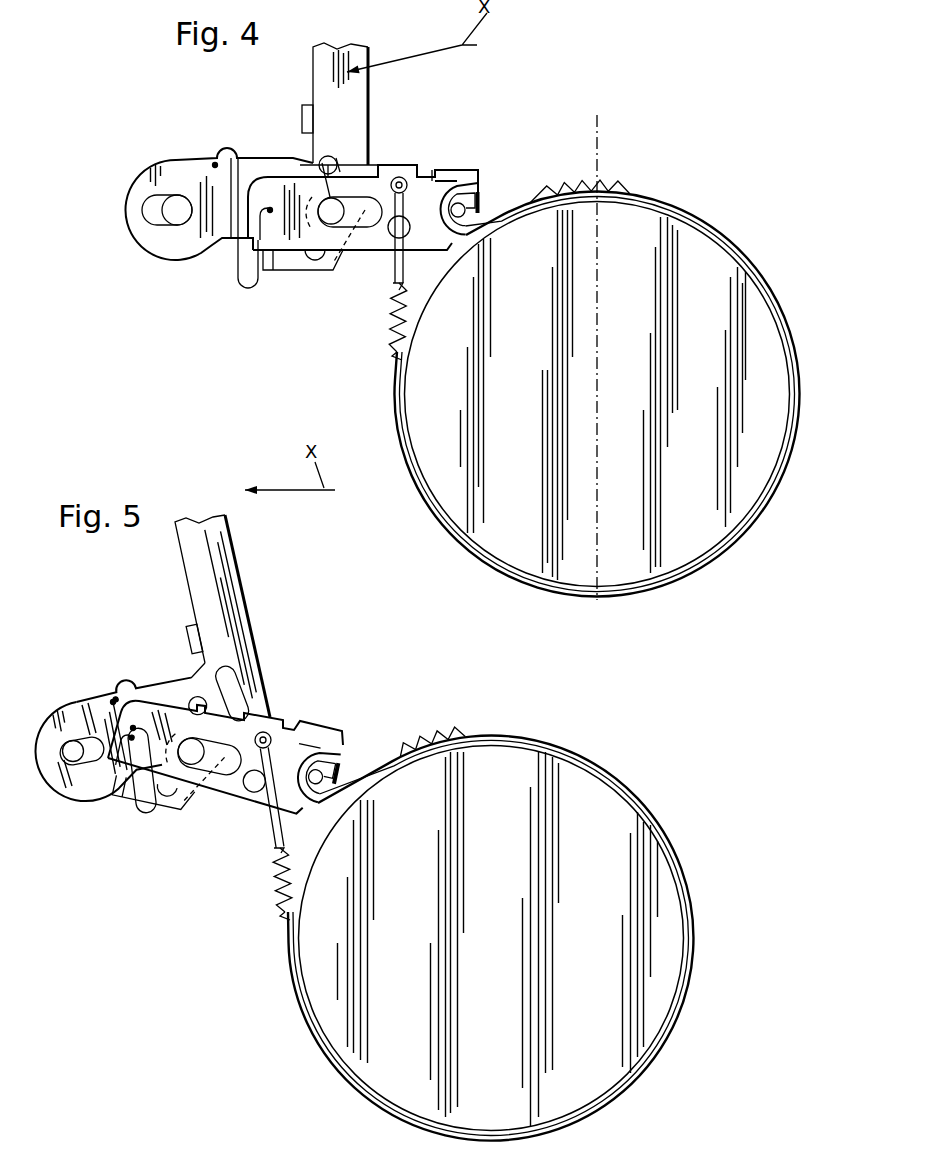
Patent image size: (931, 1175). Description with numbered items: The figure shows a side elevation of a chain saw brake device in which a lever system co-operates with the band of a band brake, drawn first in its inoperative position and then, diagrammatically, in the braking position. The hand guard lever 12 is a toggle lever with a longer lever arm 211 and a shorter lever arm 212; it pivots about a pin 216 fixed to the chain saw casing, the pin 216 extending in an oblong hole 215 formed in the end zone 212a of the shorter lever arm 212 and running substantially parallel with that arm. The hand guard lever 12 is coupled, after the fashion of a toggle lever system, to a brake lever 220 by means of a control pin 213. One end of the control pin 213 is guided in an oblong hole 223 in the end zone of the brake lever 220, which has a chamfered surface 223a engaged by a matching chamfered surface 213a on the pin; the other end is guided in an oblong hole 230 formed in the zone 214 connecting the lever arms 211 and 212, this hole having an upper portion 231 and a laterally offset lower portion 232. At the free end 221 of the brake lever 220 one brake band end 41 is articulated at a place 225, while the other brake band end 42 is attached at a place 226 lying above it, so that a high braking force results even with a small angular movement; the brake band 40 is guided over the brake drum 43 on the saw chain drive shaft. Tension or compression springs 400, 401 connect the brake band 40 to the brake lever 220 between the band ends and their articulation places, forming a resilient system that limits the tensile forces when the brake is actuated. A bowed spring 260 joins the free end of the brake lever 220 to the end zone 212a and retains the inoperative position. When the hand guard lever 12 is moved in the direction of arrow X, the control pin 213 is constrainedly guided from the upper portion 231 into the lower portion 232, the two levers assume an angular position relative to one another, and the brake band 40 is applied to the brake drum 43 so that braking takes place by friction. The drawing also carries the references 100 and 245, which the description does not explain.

In FIG. 4, the hand guard lever 12 is at (372, 44).
In FIG. 5, the hand guard lever 12 is at (253, 560).
In FIG. 4, the brake band 40 is at (422, 505).
In FIG. 5, the brake band 40 is at (300, 990).
In FIG. 4, the brake band end 41 is at (643, 195).
In FIG. 5, the brake band end 41 is at (525, 741).
In FIG. 4, the brake band end 42 is at (395, 380).
In FIG. 5, the brake band end 42 is at (285, 917).
In FIG. 4, the brake drum 43 is at (478, 502).
In FIG. 5, the brake drum 43 is at (355, 1045).
In FIG. 5, the direction of movement 100 is at (287, 693).
In FIG. 4, the longer lever arm 211 is at (328, 55).
In FIG. 5, the longer lever arm 211 is at (210, 602).
In FIG. 4, the shorter lever arm 212 is at (178, 170).
In FIG. 5, the shorter lever arm 212 is at (102, 708).
In FIG. 4, the end zone of lever arm 212a is at (158, 175).
In FIG. 4, the control pin 213 is at (337, 227).
In FIG. 4, the chamfered surface 213a is at (365, 200).
In FIG. 4, the connecting zone 214 is at (273, 165).
In FIG. 4, the oblong hole 215 is at (155, 223).
In FIG. 5, the oblong hole 215 is at (90, 760).
In FIG. 4, the pin 216 is at (178, 217).
In FIG. 5, the pin 216 is at (68, 758).
In FIG. 4, the brake lever 220 is at (377, 258).
In FIG. 5, the brake lever 220 is at (260, 762).
In FIG. 4, the free end of brake lever 221 is at (442, 185).
In FIG. 4, the oblong hole 223 is at (355, 207).
In FIG. 5, the oblong hole 223 is at (193, 753).
In FIG. 4, the chamfered surface 223a is at (327, 177).
In FIG. 4, the articulation place 225 is at (478, 200).
In FIG. 5, the articulation place 225 is at (323, 755).
In FIG. 4, the articulation place 226 is at (405, 183).
In FIG. 5, the articulation place 226 is at (268, 732).
In FIG. 4, the oblong hole 230 is at (327, 147).
In FIG. 4, the upper oblong hole portion 231 is at (342, 160).
In FIG. 4, the lower oblong hole portion 232 is at (317, 255).
In FIG. 4, the center line 245 is at (600, 145).
In FIG. 4, the bowed spring 260 is at (243, 287).
In FIG. 4, the tension or compression spring 400 is at (583, 186).
In FIG. 5, the tension or compression spring 400 is at (443, 736).
In FIG. 4, the tension or compression spring 401 is at (392, 340).
In FIG. 5, the tension or compression spring 401 is at (283, 868).